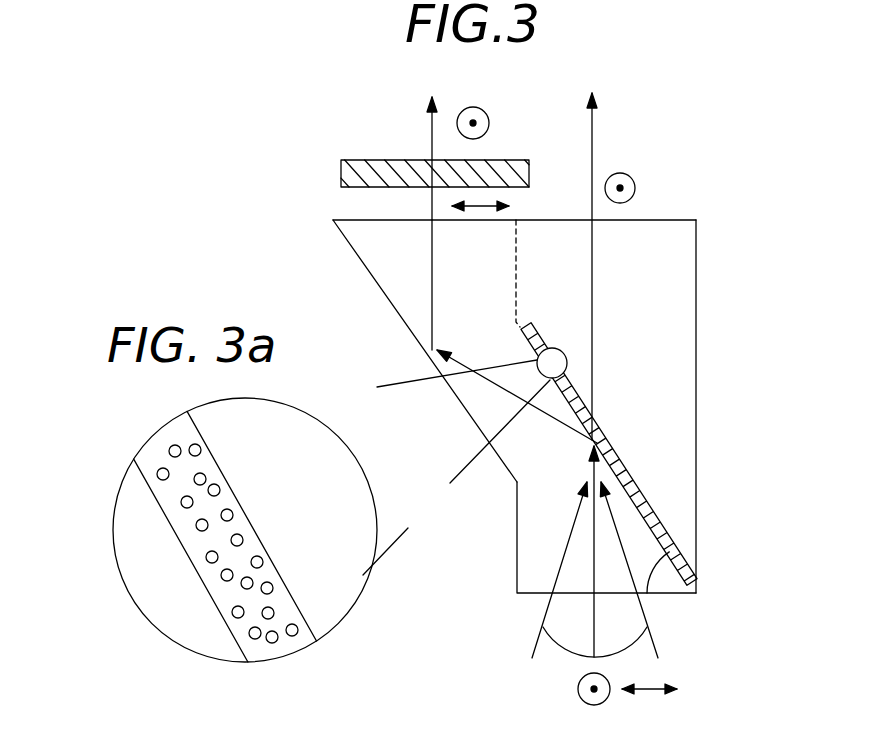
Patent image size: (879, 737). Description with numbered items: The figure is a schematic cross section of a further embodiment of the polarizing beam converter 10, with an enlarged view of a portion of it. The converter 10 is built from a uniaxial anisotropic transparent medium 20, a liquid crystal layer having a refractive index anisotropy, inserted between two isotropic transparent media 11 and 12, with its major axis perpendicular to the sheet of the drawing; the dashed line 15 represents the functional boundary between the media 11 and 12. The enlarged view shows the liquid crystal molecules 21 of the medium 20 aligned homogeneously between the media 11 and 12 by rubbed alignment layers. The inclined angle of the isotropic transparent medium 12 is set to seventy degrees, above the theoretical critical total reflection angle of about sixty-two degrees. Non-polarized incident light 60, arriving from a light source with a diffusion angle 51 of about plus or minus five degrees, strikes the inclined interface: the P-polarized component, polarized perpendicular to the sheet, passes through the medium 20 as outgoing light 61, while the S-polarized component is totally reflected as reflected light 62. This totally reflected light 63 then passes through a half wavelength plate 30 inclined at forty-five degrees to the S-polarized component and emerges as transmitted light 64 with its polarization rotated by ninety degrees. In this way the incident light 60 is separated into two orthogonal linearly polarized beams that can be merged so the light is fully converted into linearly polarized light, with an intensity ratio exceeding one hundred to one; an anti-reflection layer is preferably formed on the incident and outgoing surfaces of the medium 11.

In FIG. 3, the optical pickup device 10 is at (713, 362).
In FIG. 3, the isotropic transparent medium 11 is at (638, 345).
In FIG. 3a, the isotropic transparent medium 11 is at (315, 595).
In FIG. 3, the isotropic transparent medium 12 is at (465, 323).
In FIG. 3a, the isotropic transparent medium 12 is at (153, 595).
In FIG. 3, the dashed line 15 is at (516, 245).
In FIG. 3, the uniaxial anisotropic transparent medium 20 is at (652, 500).
In FIG. 3a, the uniaxial anisotropic transparent medium 20 is at (195, 435).
In FIG. 3a, the liquid crystal molecules 21 is at (157, 474).
In FIG. 3, the half wavelength plate 30 is at (355, 176).
In FIG. 3, the diffusion angle 51 is at (572, 657).
In FIG. 3, the incident light 60 is at (642, 610).
In FIG. 3, the outgoing light 61 is at (592, 145).
In FIG. 3, the reflected light 62 is at (503, 393).
In FIG. 3, the totally reflected light 63 is at (432, 272).
In FIG. 3, the transmitted light 64 is at (432, 142).